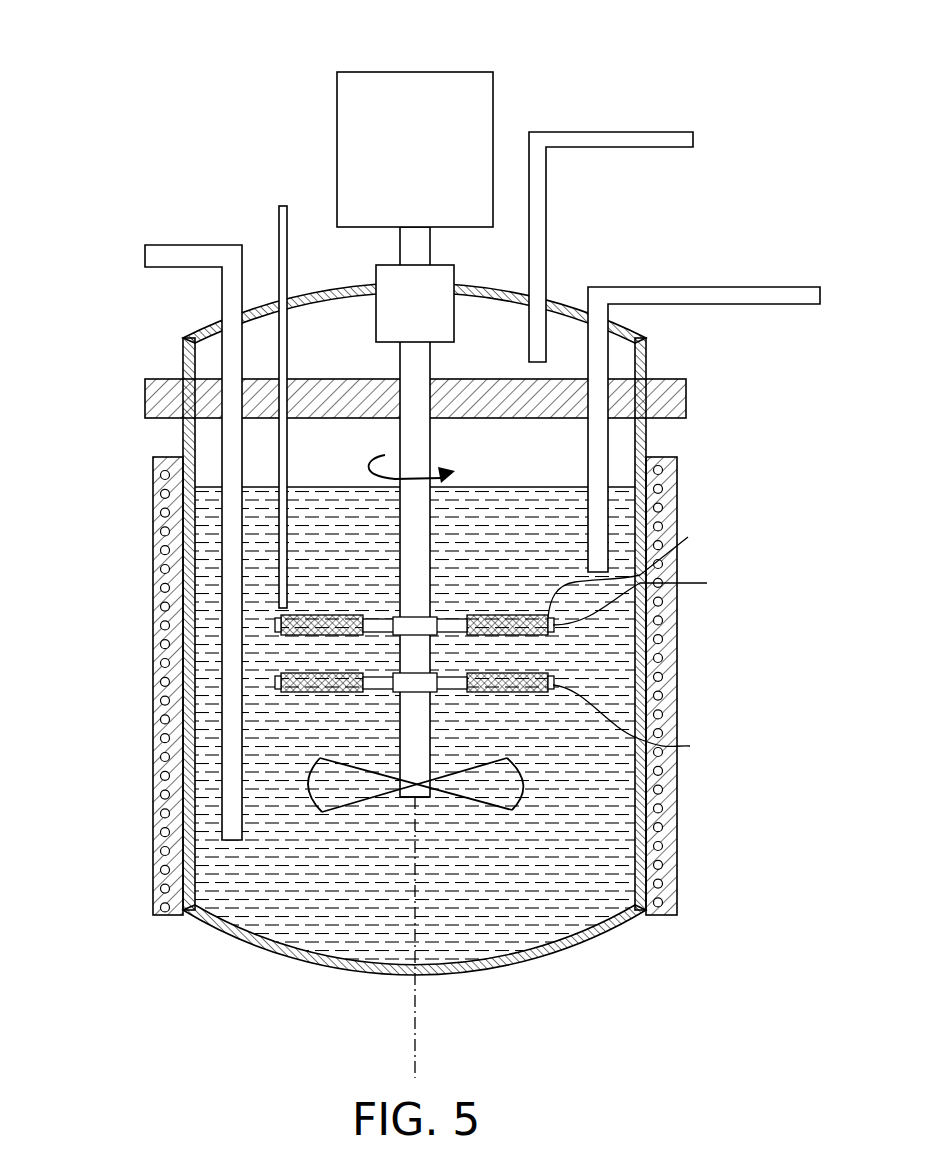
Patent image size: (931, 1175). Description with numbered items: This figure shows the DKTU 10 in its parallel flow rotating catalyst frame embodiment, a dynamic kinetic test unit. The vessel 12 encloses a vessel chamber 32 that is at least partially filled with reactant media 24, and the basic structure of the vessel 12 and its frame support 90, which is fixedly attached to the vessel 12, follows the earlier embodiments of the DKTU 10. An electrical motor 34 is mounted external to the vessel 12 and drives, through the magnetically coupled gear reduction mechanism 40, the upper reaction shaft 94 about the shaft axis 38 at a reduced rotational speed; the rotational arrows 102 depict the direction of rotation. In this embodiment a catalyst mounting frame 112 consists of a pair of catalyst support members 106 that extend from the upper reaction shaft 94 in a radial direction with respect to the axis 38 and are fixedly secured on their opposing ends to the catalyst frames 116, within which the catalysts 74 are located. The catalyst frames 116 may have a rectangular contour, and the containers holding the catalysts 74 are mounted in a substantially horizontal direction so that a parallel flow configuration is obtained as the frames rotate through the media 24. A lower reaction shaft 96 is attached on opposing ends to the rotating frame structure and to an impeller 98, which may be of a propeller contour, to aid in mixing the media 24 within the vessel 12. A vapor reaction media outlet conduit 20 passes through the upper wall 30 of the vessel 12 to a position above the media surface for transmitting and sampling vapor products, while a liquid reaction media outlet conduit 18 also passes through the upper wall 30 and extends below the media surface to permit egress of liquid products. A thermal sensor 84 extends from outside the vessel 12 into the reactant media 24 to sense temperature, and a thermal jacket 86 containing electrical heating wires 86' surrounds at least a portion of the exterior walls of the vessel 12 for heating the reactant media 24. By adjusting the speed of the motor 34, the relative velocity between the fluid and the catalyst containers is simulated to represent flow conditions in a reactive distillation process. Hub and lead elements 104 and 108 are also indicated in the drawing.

The DKTU 10 is at (138, 95).
The vessel 12 is at (647, 358).
The liquid reaction media outlet conduit 18 is at (689, 288).
The vapor reaction media outlet conduit 20 is at (607, 131).
The reactant media 24 is at (451, 890).
The upper wall 30 is at (558, 300).
The vessel chamber 32 is at (180, 245).
The electrical motor 34 is at (431, 165).
The shaft axis 38 is at (415, 1012).
The gear reduction mechanism 40 is at (431, 313).
The catalyst 74 is at (297, 692).
The thermal sensor 84 is at (279, 225).
The thermal jacket 86 is at (460, 686).
The electrical heating wires 86' is at (467, 689).
The frame support 90 is at (685, 398).
The upper reaction shaft 94 is at (400, 437).
The lower reaction shaft 96 is at (400, 742).
The impeller 98 is at (332, 808).
The rotational arrows 102 is at (372, 483).
The hub 104 is at (433, 617).
The catalyst support members 106 is at (384, 616).
The lead wire 108 is at (639, 563).
The catalyst mounting frame 112 is at (470, 603).
The catalyst frames 116 is at (652, 665).